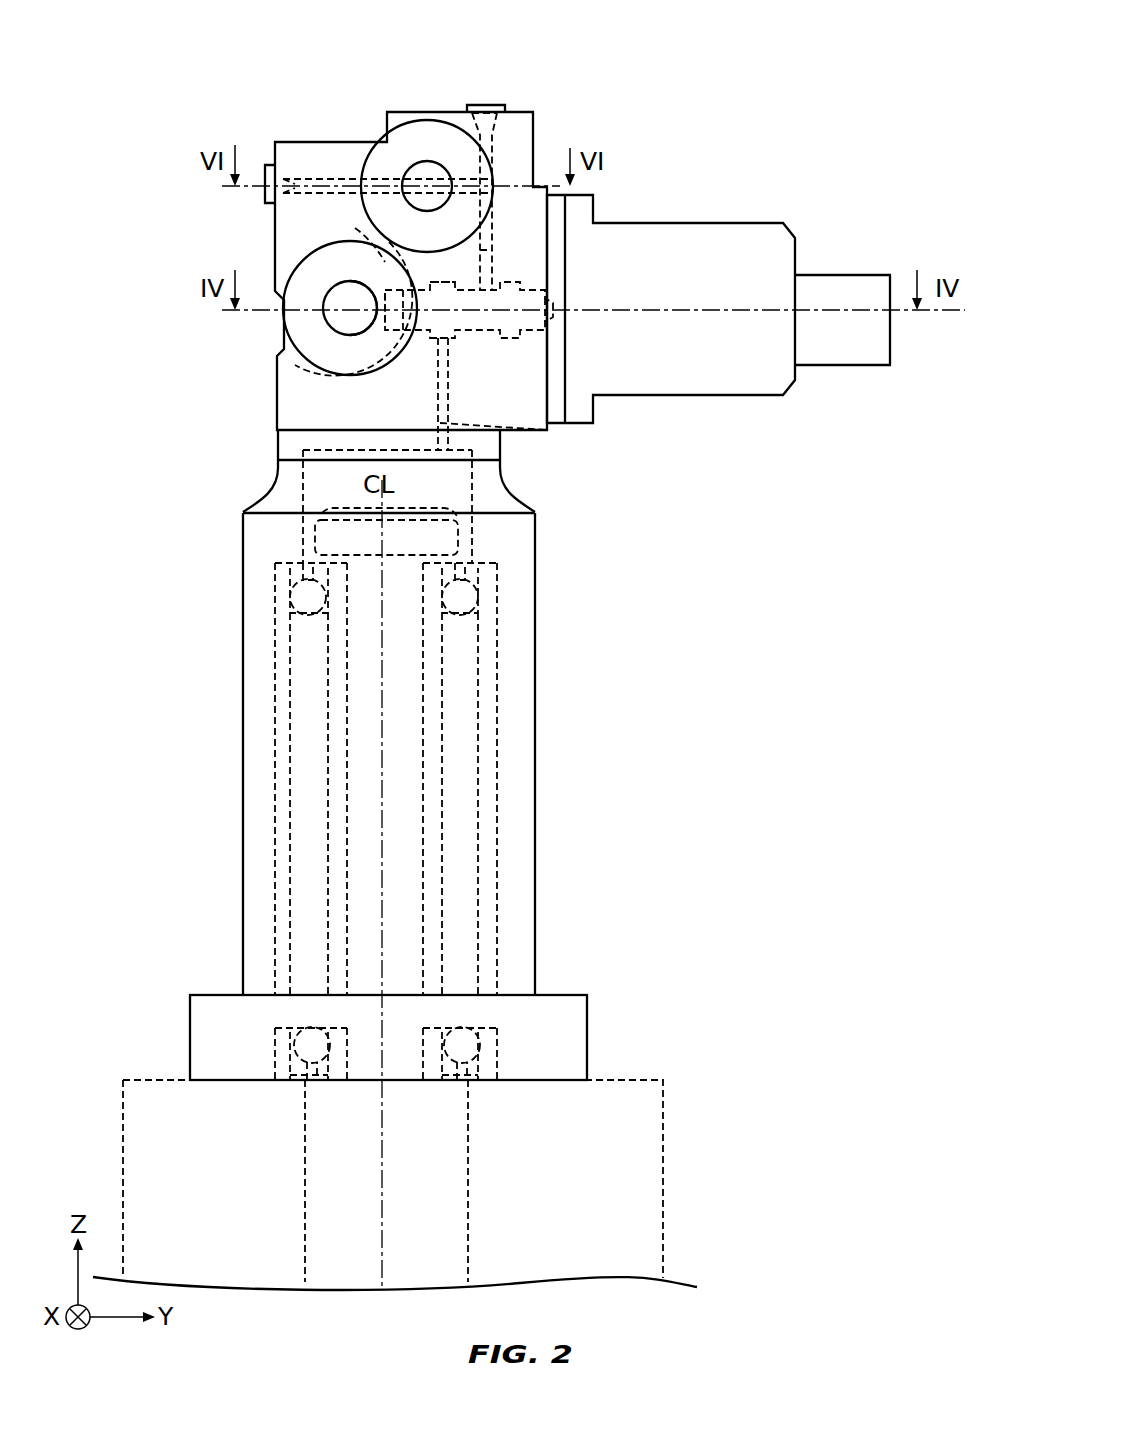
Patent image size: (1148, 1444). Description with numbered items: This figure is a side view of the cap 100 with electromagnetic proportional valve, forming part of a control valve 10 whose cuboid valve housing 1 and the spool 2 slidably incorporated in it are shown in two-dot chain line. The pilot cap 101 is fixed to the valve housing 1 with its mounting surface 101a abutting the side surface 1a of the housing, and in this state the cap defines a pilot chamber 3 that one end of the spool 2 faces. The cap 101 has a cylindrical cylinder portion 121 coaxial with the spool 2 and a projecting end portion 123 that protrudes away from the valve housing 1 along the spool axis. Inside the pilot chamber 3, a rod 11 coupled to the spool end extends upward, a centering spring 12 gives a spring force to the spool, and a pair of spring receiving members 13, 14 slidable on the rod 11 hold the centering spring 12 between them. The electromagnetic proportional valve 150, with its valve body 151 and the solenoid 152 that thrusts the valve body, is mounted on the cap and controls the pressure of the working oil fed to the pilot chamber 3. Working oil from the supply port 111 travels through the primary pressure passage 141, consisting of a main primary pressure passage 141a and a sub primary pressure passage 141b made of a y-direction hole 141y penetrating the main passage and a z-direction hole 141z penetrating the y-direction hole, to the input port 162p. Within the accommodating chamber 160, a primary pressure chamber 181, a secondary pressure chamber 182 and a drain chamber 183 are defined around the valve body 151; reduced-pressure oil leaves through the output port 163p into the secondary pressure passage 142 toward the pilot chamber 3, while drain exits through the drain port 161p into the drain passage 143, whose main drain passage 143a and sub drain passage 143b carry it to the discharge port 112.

The valve housing 1 is at (663, 1097).
The side surface 1a is at (617, 1078).
The spool 2 is at (470, 1220).
The pilot chamber 3 is at (497, 882).
The control valve 10 is at (743, 938).
The rod 11 is at (425, 715).
The centering spring 12 is at (480, 803).
The spring receiving member 13 is at (280, 575).
The spring receiving member 14 is at (285, 1073).
The cap with electromagnetic proportional valve 100 is at (267, 135).
The pilot cap 101 is at (243, 798).
The mounting surface 101a is at (563, 1083).
The supply port 111 is at (418, 160).
The discharge port 112 is at (337, 287).
The cylinder portion 121 is at (537, 597).
The projecting end portion 123 is at (272, 248).
The primary pressure passage 141 is at (574, 177).
The main primary pressure passage 141a is at (446, 168).
The sub primary pressure passage 141b is at (636, 197).
The y-direction hole 141y is at (487, 172).
The z-direction hole 141z is at (492, 262).
The secondary pressure passage 142 is at (503, 438).
The drain passage 143 is at (257, 335).
The main drain passage 143a is at (325, 315).
The sub drain passage 143b is at (295, 367).
The electromagnetic proportional valve 150 is at (765, 213).
The valve body 151 is at (590, 390).
The solenoid 152 is at (728, 377).
The accommodating chamber 160 is at (566, 272).
The drain port 161p is at (410, 357).
The input port 162p is at (548, 258).
The output port 163p is at (545, 430).
The primary pressure chamber 181 is at (480, 290).
The secondary pressure chamber 182 is at (450, 338).
The drain chamber 183 is at (351, 231).